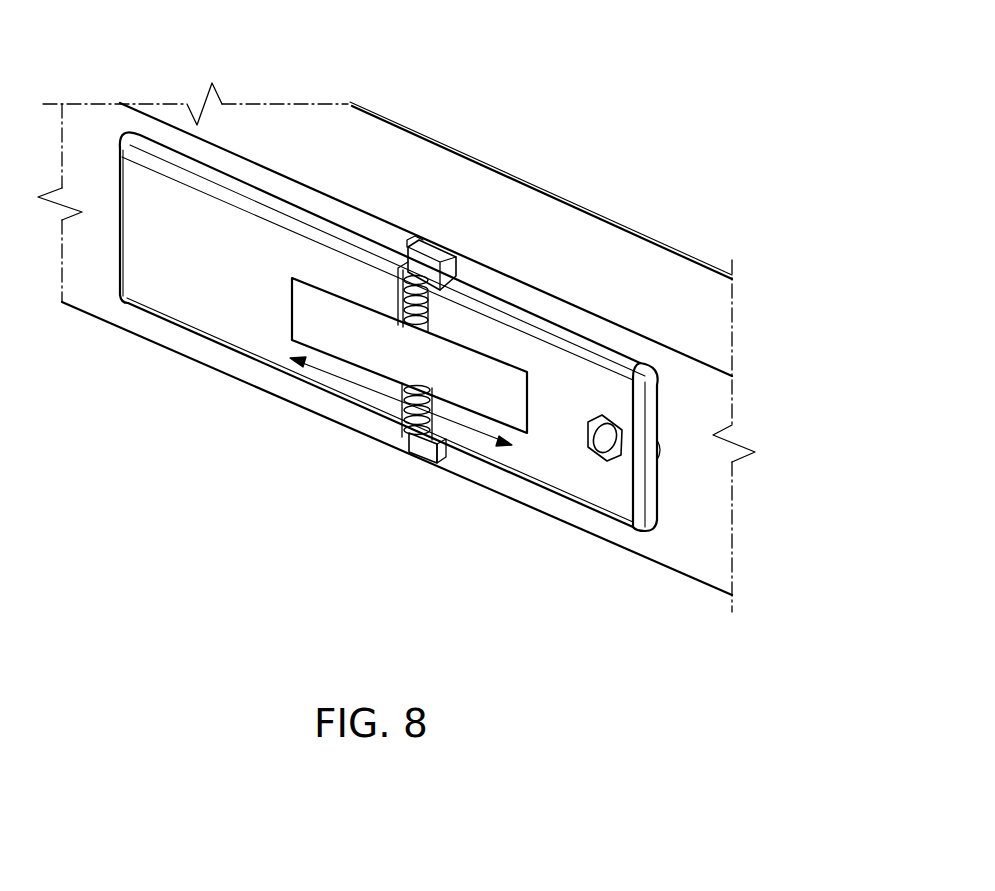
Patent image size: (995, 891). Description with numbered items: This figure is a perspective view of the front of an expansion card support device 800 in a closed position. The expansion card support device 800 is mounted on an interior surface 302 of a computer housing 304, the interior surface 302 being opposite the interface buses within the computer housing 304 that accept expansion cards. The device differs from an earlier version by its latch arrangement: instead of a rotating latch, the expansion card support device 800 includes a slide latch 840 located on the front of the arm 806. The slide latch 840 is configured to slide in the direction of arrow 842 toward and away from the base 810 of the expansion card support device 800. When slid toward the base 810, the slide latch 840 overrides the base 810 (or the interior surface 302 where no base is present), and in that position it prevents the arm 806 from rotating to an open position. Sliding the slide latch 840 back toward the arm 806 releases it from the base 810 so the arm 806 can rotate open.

The interior surface 302 is at (683, 532).
The computer housing 304 is at (573, 127).
The expansion card support device 800 is at (397, 507).
The arm 806 is at (390, 360).
The base 810 is at (562, 472).
The slide latch 840 is at (296, 330).
The arrow 842 is at (352, 378).